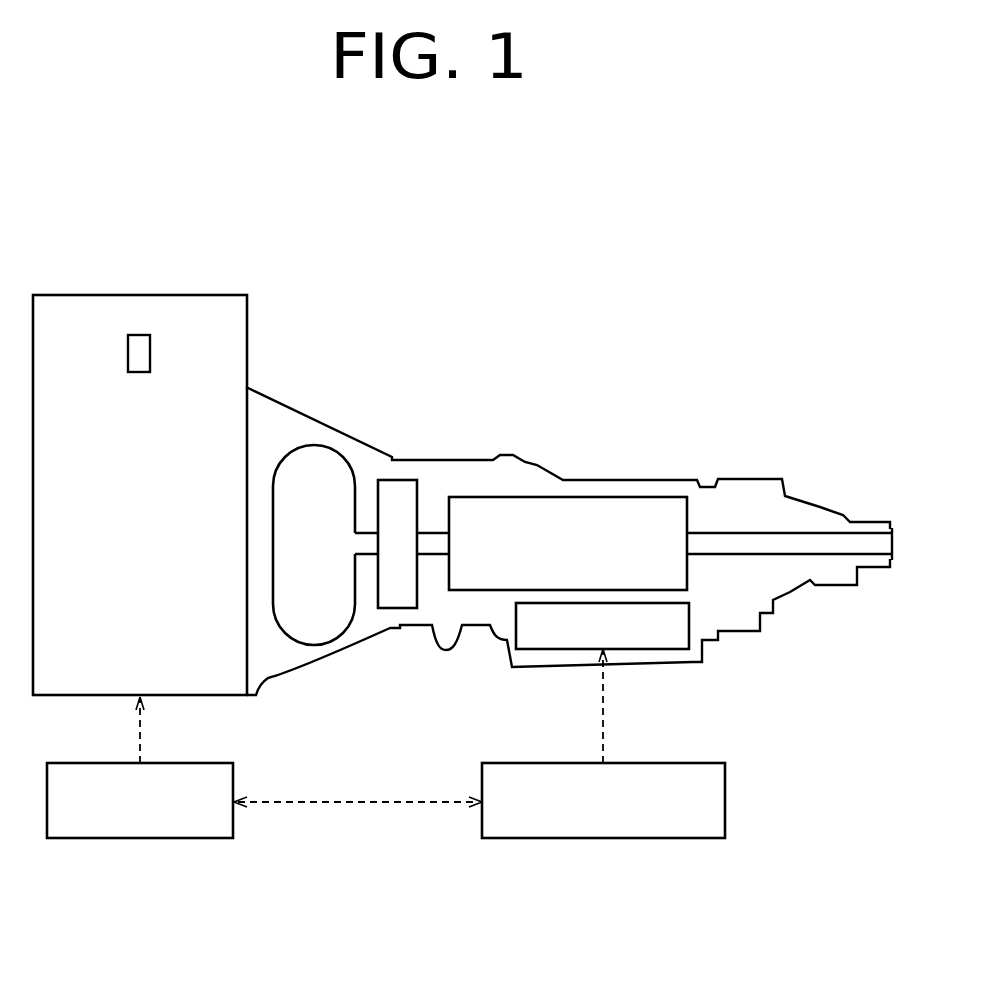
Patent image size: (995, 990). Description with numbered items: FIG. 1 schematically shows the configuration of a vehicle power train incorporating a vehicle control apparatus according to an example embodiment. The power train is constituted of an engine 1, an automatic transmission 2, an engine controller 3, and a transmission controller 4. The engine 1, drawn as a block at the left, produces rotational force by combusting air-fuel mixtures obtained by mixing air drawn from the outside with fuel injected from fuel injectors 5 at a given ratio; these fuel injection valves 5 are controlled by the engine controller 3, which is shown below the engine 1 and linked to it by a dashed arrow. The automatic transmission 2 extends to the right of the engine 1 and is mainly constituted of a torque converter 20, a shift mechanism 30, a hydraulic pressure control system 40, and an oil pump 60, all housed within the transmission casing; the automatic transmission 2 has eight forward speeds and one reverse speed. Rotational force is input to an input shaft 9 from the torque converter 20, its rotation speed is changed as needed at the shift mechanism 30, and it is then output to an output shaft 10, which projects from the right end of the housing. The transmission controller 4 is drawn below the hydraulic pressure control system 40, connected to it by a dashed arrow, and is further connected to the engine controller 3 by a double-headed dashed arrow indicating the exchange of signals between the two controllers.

The engine 1 is at (172, 295).
The automatic transmission 2 is at (503, 435).
The engine controller 3 is at (182, 840).
The transmission controller 4 is at (692, 840).
The fuel injectors 5 is at (128, 352).
The input shaft 9 is at (439, 540).
The output shaft 10 is at (863, 542).
The torque converter 20 is at (318, 458).
The shift mechanism 30 is at (648, 512).
The hydraulic pressure control system 40 is at (690, 609).
The oil pump 60 is at (400, 490).